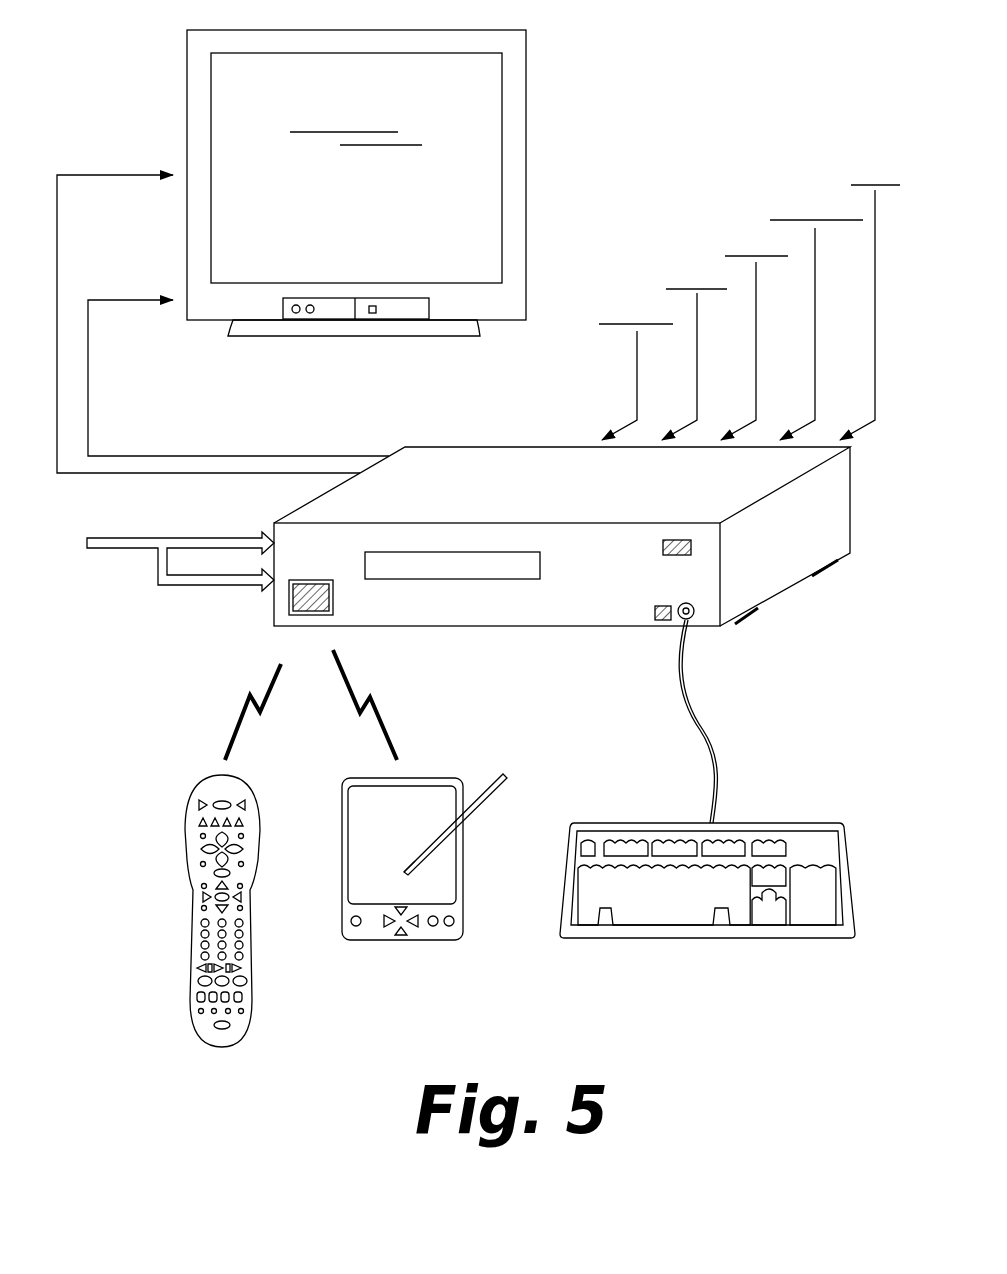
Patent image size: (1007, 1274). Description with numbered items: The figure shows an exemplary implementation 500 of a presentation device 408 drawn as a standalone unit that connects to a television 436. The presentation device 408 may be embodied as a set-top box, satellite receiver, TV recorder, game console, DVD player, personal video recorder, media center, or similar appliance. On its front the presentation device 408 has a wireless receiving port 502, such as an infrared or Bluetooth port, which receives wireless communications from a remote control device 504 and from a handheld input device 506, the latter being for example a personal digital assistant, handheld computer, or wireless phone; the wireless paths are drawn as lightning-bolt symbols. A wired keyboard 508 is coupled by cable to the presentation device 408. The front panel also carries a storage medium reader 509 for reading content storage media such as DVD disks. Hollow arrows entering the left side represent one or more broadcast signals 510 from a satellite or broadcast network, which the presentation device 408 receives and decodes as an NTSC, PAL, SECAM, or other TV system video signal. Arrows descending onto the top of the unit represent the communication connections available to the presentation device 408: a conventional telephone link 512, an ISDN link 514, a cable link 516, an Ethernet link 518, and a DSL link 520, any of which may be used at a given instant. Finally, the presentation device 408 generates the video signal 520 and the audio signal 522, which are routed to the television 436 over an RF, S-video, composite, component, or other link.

The exemplary implementation 500 is at (648, 58).
The television 436 is at (476, 272).
The DSL link / video signal 520 is at (148, 211).
The audio signal 522 is at (148, 336).
The telephone link 512 is at (637, 283).
The ISDN link 514 is at (697, 245).
The cable link 516 is at (757, 213).
The Ethernet link 518 is at (815, 178).
The presentation device 408 is at (468, 447).
The wireless receiving port 502 is at (325, 580).
The storage medium reader 509 is at (452, 578).
The broadcast signal 510 is at (143, 548).
The remote control device 504 is at (190, 800).
The handheld input device 506 is at (420, 778).
The wired keyboard 508 is at (752, 823).